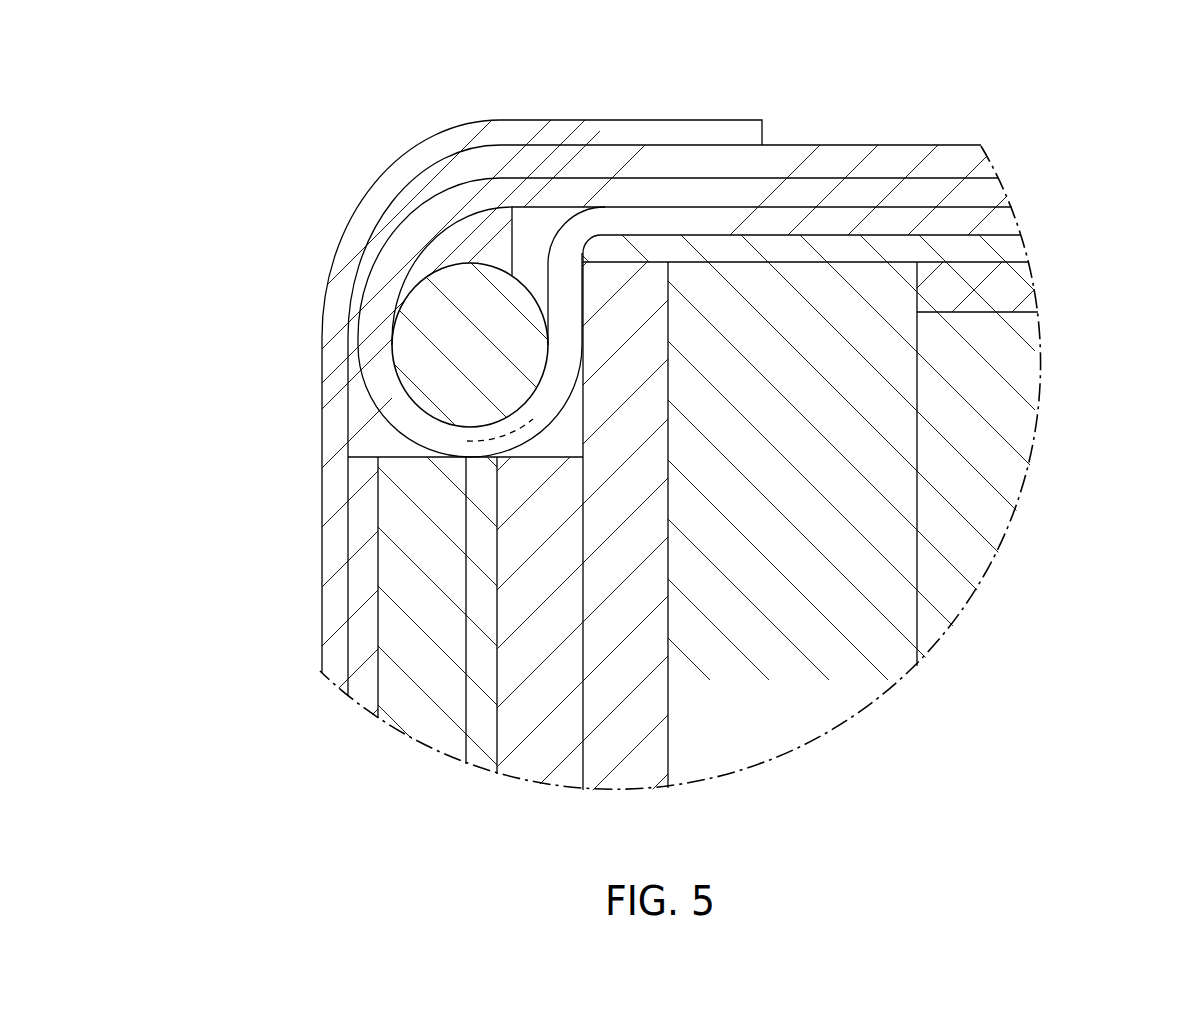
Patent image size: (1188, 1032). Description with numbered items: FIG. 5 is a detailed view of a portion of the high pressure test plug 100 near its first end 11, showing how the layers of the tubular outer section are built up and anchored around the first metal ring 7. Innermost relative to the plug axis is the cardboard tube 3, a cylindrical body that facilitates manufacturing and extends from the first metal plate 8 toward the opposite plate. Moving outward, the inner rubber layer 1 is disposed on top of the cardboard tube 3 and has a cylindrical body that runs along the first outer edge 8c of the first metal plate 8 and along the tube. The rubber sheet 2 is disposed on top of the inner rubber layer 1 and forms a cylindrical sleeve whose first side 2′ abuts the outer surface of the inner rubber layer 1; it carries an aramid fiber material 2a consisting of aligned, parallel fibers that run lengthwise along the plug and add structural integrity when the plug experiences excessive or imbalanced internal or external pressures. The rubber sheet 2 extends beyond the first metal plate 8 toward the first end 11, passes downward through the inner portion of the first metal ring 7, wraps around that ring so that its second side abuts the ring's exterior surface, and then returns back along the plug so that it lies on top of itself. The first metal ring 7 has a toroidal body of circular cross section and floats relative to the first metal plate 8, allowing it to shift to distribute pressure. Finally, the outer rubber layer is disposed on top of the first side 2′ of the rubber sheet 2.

The test plug 100 is at (1055, 112).
The first end 11 is at (262, 450).
The rubber sheet 2 is at (653, 190).
The first side of the rubber sheet 2′ is at (623, 228).
The aramid fiber material 2a is at (487, 448).
The first metal ring 7 is at (428, 265).
The inner rubber layer 1 is at (783, 243).
The first metal plate 8 is at (948, 545).
The first outer edge of the first metal plate 8c is at (785, 265).
The cardboard tube 3 is at (975, 315).